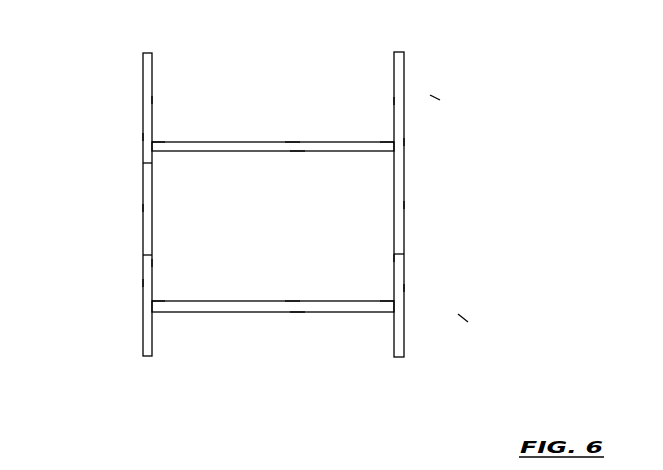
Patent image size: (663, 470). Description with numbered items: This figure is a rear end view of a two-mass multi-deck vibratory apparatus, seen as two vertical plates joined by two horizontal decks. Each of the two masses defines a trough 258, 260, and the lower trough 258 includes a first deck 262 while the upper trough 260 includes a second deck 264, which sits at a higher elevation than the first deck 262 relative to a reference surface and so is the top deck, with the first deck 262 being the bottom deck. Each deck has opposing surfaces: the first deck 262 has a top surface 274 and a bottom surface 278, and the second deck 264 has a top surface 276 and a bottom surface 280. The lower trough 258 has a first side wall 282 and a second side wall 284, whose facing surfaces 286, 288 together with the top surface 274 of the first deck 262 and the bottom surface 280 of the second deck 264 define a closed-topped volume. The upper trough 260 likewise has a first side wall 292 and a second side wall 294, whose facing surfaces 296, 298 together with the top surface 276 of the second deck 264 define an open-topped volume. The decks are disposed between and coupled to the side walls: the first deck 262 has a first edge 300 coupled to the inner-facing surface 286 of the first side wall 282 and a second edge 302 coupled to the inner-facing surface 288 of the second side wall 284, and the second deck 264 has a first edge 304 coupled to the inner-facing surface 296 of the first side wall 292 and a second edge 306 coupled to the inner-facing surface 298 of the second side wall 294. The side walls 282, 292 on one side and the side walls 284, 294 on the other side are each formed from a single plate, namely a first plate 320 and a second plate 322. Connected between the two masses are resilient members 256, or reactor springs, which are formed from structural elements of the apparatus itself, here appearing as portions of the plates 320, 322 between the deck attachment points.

The resilient members 256 is at (145, 208).
The trough 258 is at (466, 319).
The trough 260 is at (440, 96).
The first deck 262 is at (252, 300).
The second deck 264 is at (252, 140).
The first surface 274 is at (292, 299).
The first surface 276 is at (292, 138).
The second surface 278 is at (298, 315).
The second surface 280 is at (298, 155).
The first side wall 282 is at (408, 288).
The second side wall 284 is at (140, 283).
The facing surface 286 is at (391, 258).
The facing surface 288 is at (156, 262).
The first side wall 292 is at (408, 142).
The second side wall 294 is at (140, 137).
The facing surface 296 is at (391, 101).
The facing surface 298 is at (158, 143).
The first edge 300 is at (390, 300).
The second edge 302 is at (158, 301).
The first edge 304 is at (390, 141).
The second edge 306 is at (156, 100).
The first plate 320 is at (404, 75).
The second plate 322 is at (146, 85).